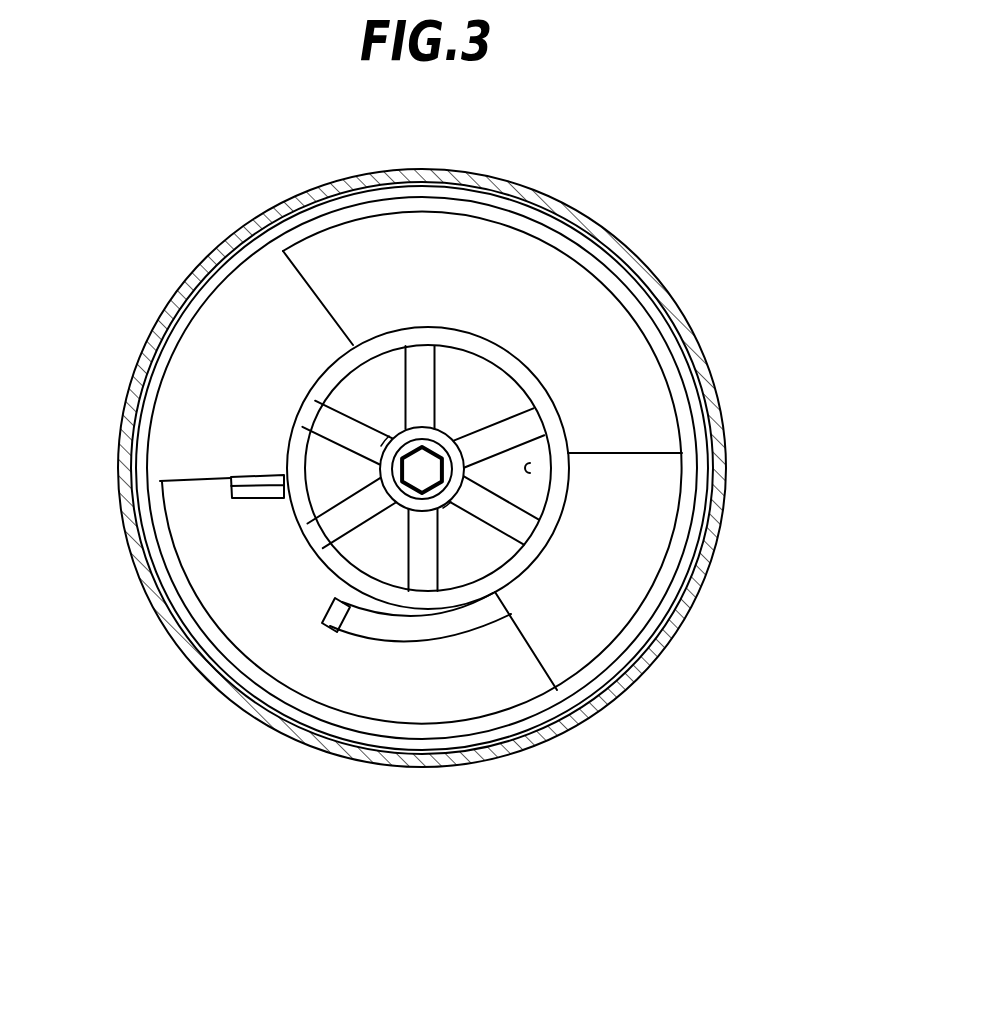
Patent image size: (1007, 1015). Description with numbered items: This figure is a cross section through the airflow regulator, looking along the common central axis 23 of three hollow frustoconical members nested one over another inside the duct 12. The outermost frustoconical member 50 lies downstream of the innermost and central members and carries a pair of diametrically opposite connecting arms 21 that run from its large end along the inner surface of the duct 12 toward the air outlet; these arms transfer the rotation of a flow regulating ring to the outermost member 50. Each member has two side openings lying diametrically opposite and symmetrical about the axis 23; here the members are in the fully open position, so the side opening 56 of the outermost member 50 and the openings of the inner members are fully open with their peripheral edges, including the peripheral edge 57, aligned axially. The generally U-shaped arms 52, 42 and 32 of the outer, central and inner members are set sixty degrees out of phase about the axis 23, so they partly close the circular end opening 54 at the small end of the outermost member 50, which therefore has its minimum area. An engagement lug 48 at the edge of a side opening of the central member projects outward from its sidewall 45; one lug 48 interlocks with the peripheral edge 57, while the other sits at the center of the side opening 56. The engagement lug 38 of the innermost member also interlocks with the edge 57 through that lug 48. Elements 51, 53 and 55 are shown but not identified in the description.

The duct 12 is at (692, 323).
The connecting arm 21 is at (190, 305).
The common central axis 23 is at (423, 470).
The arm of innermost frustoconical member 32 is at (427, 380).
The engagement lug 38 is at (230, 490).
The arm of central frustoconical member 42 is at (485, 431).
The sidewall of central frustoconical member 45 is at (467, 619).
The engagement lug 48 is at (230, 479).
The outermost frustoconical member 50 is at (676, 498).
The ring 51 is at (534, 508).
The arm of outermost frustoconical member 52 is at (349, 432).
The hub 53 is at (432, 434).
The end opening 54 is at (534, 470).
The peripheral wall 55 is at (207, 402).
The side opening of outermost frustoconical member 56 is at (572, 296).
The peripheral edge of side opening 57 is at (297, 273).